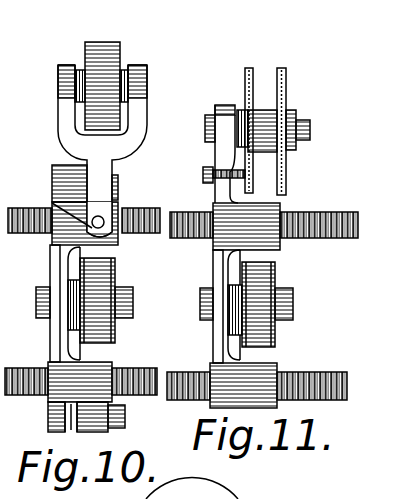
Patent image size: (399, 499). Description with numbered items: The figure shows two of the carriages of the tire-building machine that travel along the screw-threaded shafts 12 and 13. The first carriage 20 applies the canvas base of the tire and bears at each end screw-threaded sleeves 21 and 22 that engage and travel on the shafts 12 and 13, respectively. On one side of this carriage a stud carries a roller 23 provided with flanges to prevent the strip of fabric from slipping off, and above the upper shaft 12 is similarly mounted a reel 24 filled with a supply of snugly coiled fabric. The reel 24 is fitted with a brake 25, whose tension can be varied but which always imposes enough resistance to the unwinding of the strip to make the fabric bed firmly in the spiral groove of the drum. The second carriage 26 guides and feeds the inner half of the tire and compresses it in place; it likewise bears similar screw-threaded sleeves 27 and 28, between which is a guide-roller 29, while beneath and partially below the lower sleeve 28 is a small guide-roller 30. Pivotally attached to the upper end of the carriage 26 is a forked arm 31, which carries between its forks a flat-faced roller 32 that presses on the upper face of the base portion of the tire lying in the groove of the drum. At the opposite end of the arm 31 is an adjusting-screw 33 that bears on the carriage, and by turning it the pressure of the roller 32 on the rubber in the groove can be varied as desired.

In FIG. 11, the shaft 12 is at (350, 212).
In FIG. 11, the shaft 13 is at (312, 373).
In FIG. 11, the carriage 20 is at (213, 268).
In FIG. 11, the screw-threaded sleeve 21 is at (280, 252).
In FIG. 11, the screw-threaded sleeve 22 is at (282, 358).
In FIG. 11, the roller 23 is at (277, 335).
In FIG. 11, the reel 24 is at (265, 116).
In FIG. 11, the brake 25 is at (203, 175).
In FIG. 10, the carriage 26 is at (50, 262).
In FIG. 10, the screw-threaded sleeve 27 is at (120, 246).
In FIG. 10, the screw-threaded sleeve 28 is at (112, 362).
In FIG. 10, the guide-roller 29 is at (115, 335).
In FIG. 10, the small guide-roller 30 is at (125, 424).
In FIG. 10, the forked arm 31 is at (146, 128).
In FIG. 10, the flat-faced roller 32 is at (119, 77).
In FIG. 10, the adjusting-screw 33 is at (88, 228).